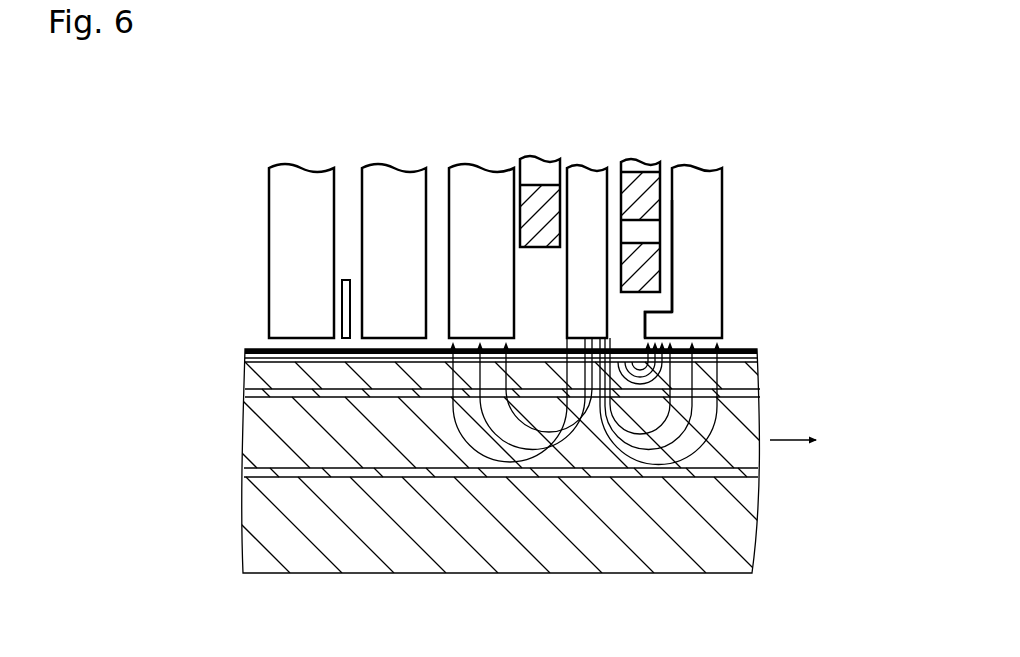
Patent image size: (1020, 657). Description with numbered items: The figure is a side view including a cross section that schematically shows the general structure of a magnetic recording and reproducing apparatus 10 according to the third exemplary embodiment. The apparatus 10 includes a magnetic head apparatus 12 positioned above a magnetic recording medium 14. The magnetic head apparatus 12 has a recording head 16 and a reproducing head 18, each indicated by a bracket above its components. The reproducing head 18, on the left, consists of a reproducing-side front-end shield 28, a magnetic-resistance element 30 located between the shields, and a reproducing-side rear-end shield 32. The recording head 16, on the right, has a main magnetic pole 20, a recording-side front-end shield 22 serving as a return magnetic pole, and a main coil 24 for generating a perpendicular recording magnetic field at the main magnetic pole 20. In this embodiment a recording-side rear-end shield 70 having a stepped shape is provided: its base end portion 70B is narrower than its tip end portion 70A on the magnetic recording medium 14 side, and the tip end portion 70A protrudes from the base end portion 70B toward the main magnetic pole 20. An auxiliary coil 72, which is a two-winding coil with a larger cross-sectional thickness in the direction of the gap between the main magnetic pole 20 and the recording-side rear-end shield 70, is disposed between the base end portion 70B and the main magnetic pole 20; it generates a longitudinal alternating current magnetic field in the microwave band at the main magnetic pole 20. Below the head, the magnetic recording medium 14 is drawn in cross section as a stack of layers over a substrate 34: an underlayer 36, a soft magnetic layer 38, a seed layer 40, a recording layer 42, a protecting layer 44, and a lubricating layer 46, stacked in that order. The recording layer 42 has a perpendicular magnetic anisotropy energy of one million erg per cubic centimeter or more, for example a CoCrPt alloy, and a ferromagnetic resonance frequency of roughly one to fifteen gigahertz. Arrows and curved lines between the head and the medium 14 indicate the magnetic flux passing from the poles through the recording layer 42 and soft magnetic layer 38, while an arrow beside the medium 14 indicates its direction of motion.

The magnetic recording and reproducing apparatus 10 is at (477, 55).
The magnetic head apparatus 12 is at (220, 237).
The magnetic recording medium 14 is at (212, 417).
The recording head 16 is at (722, 131).
The reproducing head 18 is at (269, 131).
The main magnetic pole 20 is at (583, 167).
The recording-side front-end shield 22 is at (478, 167).
The main coil 24 is at (560, 227).
The reproducing-side front-end shield 28 is at (292, 167).
The magnetic-resistance element 30 is at (351, 293).
The reproducing-side rear-end shield 32 is at (389, 167).
The substrate 34 is at (753, 510).
The underlayer 36 is at (757, 474).
The soft magnetic layer 38 is at (760, 430).
The seed layer 40 is at (760, 397).
The recording layer 42 is at (759, 383).
The protecting layer 44 is at (757, 358).
The lubricating layer 46 is at (757, 352).
The recording-side rear-end shield 70 is at (696, 167).
The tip end portion 70A is at (652, 322).
The base end portion 70B is at (716, 218).
The auxiliary coil 72 is at (660, 254).